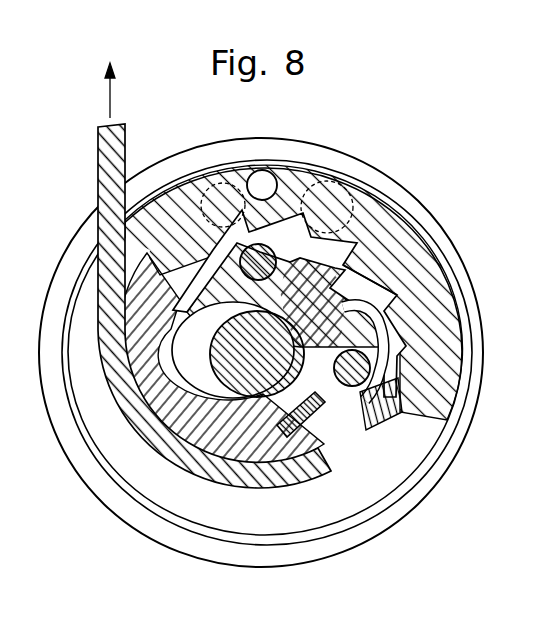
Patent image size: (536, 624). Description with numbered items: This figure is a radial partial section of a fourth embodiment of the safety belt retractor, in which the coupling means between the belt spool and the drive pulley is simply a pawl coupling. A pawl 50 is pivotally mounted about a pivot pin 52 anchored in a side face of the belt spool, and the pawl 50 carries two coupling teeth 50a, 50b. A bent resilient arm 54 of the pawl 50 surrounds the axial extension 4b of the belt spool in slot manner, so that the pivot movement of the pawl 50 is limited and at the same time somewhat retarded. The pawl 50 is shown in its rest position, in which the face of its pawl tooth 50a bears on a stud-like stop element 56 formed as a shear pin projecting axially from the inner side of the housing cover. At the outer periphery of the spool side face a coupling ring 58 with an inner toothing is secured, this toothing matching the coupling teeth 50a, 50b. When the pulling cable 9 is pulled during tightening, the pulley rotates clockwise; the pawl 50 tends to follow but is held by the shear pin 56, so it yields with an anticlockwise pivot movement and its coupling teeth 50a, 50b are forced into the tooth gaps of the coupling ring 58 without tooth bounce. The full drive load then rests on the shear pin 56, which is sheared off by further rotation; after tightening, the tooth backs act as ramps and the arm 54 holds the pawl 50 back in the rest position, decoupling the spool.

The pulling cable 9 is at (98, 162).
The pivot pin 52 is at (270, 248).
The pawl 50 is at (330, 247).
The coupling tooth 50b is at (347, 287).
The pawl tooth 50a is at (362, 345).
The coupling ring 58 is at (437, 386).
The stop element 56 is at (350, 438).
The axial extension 4b is at (281, 385).
The bent resilient arm 54 is at (217, 410).